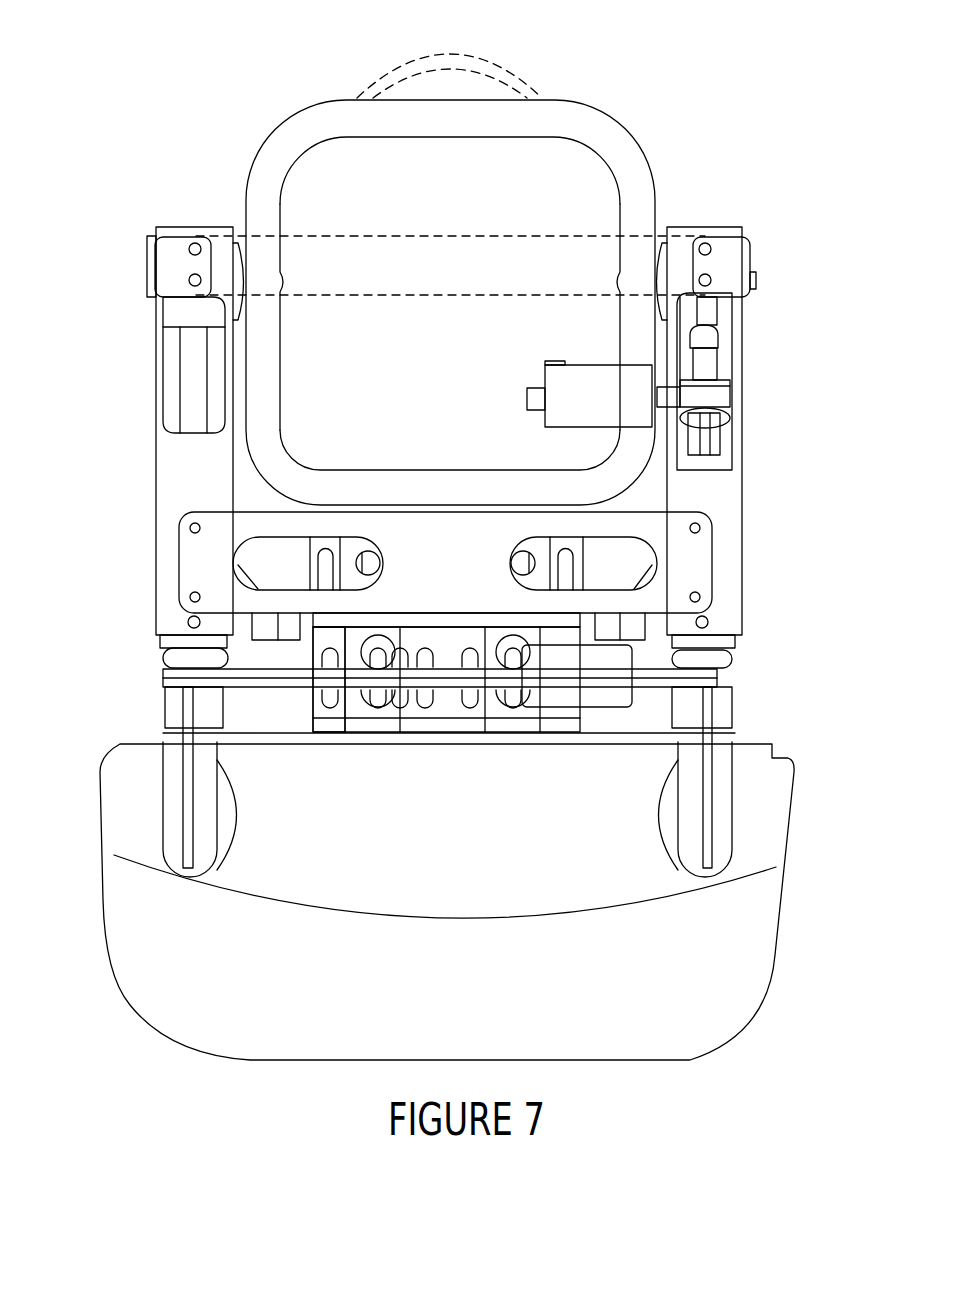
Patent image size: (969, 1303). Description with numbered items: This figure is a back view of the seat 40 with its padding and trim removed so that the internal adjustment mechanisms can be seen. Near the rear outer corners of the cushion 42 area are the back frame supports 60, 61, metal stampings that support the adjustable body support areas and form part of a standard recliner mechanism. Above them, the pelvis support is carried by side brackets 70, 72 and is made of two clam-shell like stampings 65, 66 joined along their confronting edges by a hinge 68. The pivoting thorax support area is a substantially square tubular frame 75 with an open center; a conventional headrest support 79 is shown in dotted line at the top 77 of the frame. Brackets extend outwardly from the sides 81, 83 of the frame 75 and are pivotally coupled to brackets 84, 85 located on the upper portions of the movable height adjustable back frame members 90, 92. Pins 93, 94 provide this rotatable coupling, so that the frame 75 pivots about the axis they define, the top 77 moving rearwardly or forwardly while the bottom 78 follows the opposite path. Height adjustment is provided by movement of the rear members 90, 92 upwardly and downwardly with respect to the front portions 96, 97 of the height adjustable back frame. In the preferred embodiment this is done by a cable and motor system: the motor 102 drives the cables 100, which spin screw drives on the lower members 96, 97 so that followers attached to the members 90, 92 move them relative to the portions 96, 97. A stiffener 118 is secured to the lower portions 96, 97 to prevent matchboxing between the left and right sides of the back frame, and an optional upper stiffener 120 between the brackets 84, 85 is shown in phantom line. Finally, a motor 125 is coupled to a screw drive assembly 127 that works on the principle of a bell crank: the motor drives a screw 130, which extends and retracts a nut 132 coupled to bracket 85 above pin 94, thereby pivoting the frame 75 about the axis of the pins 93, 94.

The seat 40 is at (438, 390).
The cushion 42 is at (572, 1014).
The back frame support 60 is at (197, 838).
The back frame support 61 is at (700, 830).
The clam-shell stamping 65 is at (446, 638).
The clam-shell stamping 66 is at (438, 708).
The hinge 68 is at (330, 640).
The side bracket 70 is at (258, 620).
The side bracket 72 is at (642, 622).
The tubular frame 75 is at (612, 138).
The top of frame 77 is at (405, 140).
The bottom of frame 78 is at (405, 472).
The headrest support 79 is at (500, 62).
The side of frame 81 is at (284, 372).
The side of frame 83 is at (616, 258).
The bracket 84 is at (172, 244).
The bracket 85 is at (727, 252).
The height adjustable back frame member 90 is at (210, 227).
The height adjustable back frame member 92 is at (693, 227).
The pin 93 is at (146, 284).
The pin 94 is at (756, 283).
The front portion of height adjustable back frame 96 is at (165, 707).
The front portion of height adjustable back frame 97 is at (717, 672).
The cable 100 is at (163, 667).
The motor 102 is at (585, 696).
The stiffener 118 is at (215, 546).
The upper stiffener 120 is at (462, 235).
The motor 125 is at (570, 385).
The screw drive assembly 127 is at (722, 375).
The screw 130 is at (717, 366).
The nut 132 is at (690, 318).